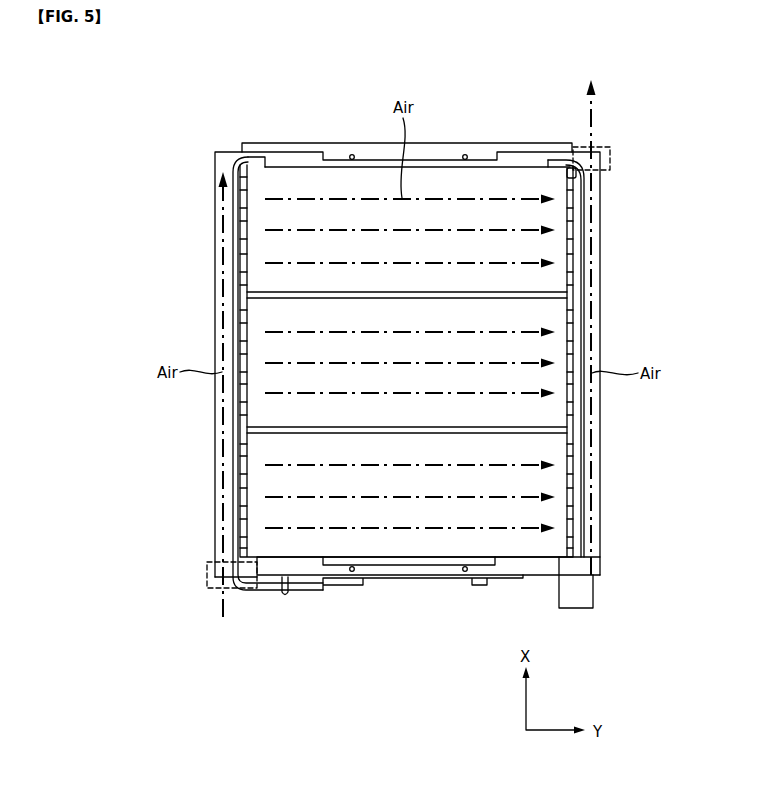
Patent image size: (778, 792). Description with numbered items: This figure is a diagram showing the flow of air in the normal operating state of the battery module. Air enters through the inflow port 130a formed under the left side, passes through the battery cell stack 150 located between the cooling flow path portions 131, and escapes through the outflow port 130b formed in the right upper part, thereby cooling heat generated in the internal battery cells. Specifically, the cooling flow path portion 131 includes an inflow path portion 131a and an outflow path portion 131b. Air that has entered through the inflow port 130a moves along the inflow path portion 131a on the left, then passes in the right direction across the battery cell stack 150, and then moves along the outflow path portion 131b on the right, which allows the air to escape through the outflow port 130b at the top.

The inflow port 130a is at (206, 575).
The outflow port 130b is at (611, 158).
The cooling flow path portion 131 is at (701, 250).
The inflow path portion 131a is at (221, 280).
The outflow path portion 131b is at (595, 297).
The battery cell stack 150 is at (405, 508).